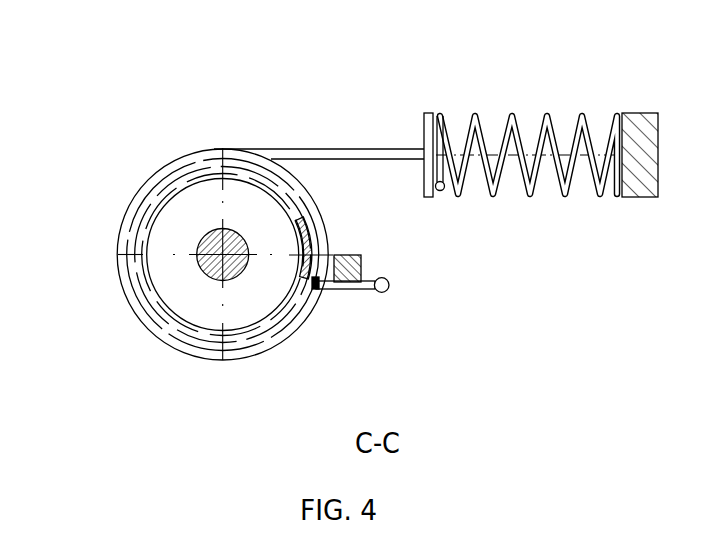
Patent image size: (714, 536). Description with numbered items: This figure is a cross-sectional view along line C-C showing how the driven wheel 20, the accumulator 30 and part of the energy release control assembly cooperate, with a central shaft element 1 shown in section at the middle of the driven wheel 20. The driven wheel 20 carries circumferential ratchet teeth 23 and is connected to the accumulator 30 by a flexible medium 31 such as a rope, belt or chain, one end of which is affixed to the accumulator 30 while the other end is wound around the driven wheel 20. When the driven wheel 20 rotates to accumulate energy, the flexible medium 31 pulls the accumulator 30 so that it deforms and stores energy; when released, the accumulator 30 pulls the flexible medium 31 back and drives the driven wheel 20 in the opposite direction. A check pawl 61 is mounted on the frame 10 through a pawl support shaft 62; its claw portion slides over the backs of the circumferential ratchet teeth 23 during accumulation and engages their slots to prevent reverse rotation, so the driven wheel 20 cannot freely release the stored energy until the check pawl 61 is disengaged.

The shaft 1 is at (200, 238).
The frame 10 is at (635, 115).
The driven wheel 20 is at (167, 242).
The circumferential ratchet teeth 23 is at (305, 224).
The accumulator 30 is at (508, 113).
The flexible medium 31 is at (345, 153).
The check pawl 61 is at (387, 293).
The pawl support shaft 62 is at (318, 290).